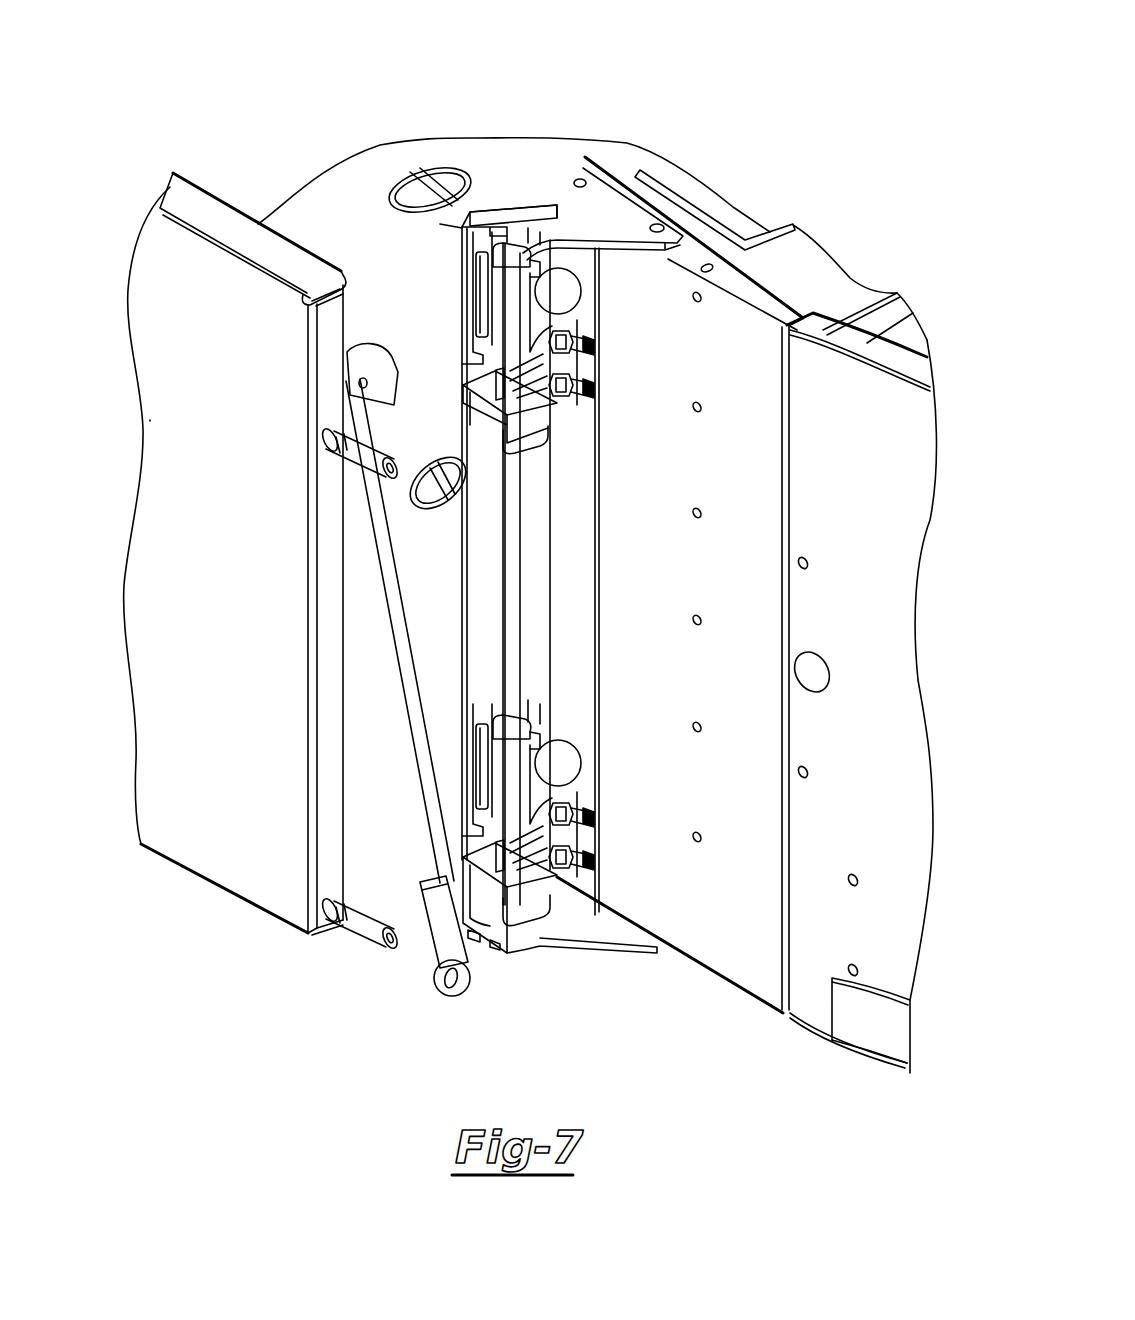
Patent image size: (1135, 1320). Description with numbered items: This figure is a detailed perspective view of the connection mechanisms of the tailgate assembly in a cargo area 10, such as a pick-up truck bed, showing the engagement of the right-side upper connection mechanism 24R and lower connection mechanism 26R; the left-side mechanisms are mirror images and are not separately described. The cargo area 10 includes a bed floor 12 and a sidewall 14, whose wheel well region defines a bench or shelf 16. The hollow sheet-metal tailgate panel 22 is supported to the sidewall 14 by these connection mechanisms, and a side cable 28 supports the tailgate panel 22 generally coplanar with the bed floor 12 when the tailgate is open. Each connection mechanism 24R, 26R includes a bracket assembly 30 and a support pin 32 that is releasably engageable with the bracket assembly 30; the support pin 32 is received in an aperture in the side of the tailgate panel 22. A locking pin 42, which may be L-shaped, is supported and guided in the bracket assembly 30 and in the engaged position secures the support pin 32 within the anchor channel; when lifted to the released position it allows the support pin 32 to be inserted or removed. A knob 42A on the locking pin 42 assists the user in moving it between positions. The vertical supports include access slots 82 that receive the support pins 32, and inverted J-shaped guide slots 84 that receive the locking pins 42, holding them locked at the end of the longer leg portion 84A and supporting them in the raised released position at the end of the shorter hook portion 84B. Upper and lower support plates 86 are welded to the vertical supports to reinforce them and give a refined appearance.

The cargo area 10 is at (410, 108).
The bed floor 12 is at (329, 190).
The sidewall 14 is at (862, 350).
The bench 16 is at (830, 287).
The tailgate panel 22 is at (214, 547).
The upper connection mechanism 24R is at (605, 303).
The lower connection mechanism 26R is at (605, 861).
The side cable 28 is at (380, 598).
The bracket assembly 30 is at (584, 372).
The support pin 32 is at (366, 461).
The locking pin 42 is at (537, 242).
The knob 42A is at (560, 282).
The access slot 82 is at (472, 386).
The guide slot 84 is at (478, 264).
The longer leg portion 84A is at (482, 322).
The shorter hook portion 84B is at (553, 267).
The support plate 86 is at (505, 200).